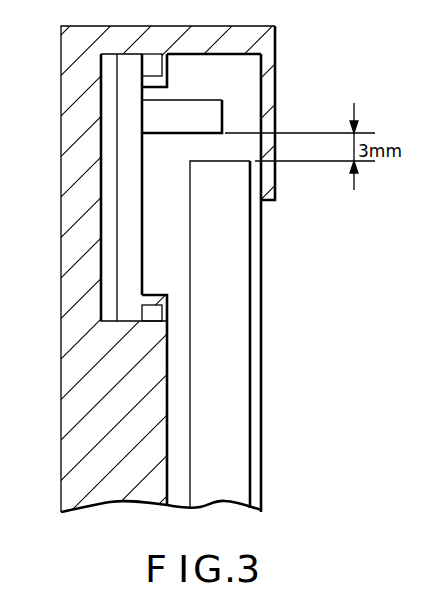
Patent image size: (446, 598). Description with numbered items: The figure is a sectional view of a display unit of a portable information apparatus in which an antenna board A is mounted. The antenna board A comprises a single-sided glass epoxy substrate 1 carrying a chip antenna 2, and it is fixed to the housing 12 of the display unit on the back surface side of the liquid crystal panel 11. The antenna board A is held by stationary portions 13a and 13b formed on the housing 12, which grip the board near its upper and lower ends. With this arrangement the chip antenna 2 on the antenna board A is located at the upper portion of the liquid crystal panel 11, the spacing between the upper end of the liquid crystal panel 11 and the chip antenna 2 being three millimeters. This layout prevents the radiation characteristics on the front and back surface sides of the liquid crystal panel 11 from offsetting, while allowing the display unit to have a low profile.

The single-sided glass epoxy substrate 1 is at (117, 196).
The chip antenna 2 is at (167, 123).
The liquid crystal panel 11 is at (232, 240).
The housing 12 is at (268, 40).
The stationary portion 13a is at (167, 62).
The stationary portion 13b is at (150, 296).
The antenna board A is at (100, 101).